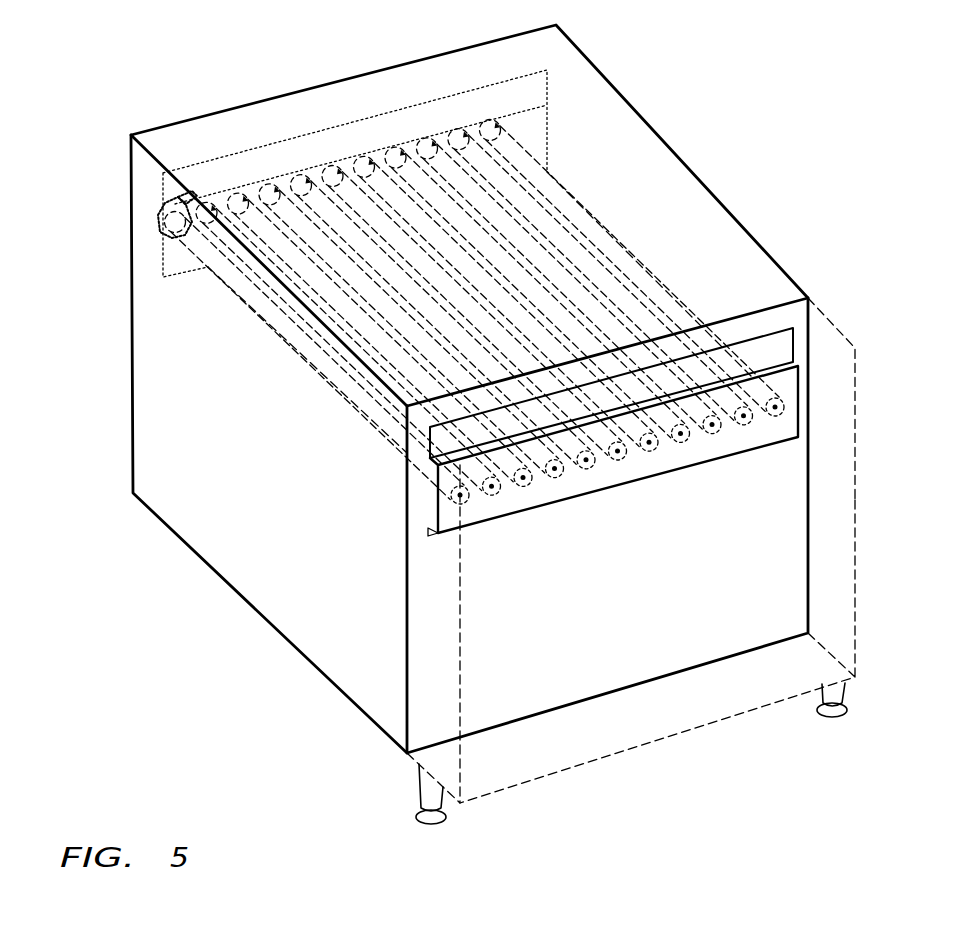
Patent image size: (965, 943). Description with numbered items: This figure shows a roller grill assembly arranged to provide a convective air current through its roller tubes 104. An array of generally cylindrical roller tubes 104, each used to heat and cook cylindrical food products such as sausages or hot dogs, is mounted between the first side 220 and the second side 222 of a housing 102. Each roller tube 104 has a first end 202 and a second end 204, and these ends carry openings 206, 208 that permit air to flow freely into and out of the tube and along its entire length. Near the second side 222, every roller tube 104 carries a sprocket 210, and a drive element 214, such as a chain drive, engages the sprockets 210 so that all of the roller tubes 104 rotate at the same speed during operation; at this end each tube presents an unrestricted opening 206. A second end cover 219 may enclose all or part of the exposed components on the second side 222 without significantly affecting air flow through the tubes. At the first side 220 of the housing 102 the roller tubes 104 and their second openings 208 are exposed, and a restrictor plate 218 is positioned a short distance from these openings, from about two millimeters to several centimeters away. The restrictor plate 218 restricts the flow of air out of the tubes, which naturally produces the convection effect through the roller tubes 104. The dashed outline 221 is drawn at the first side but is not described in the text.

The housing 102 is at (797, 278).
The roller tubes 104 is at (258, 313).
The first end 202 is at (515, 143).
The second end 204 is at (442, 493).
The opening 206 is at (420, 128).
The second opening 208 is at (617, 460).
The sprockets 210 is at (172, 197).
The drive element 214 is at (158, 205).
The restrictor plate 218 is at (800, 407).
The second end cover 219 is at (548, 88).
The first side 220 is at (843, 620).
The rear edge 221 is at (873, 478).
The second side 222 is at (133, 417).